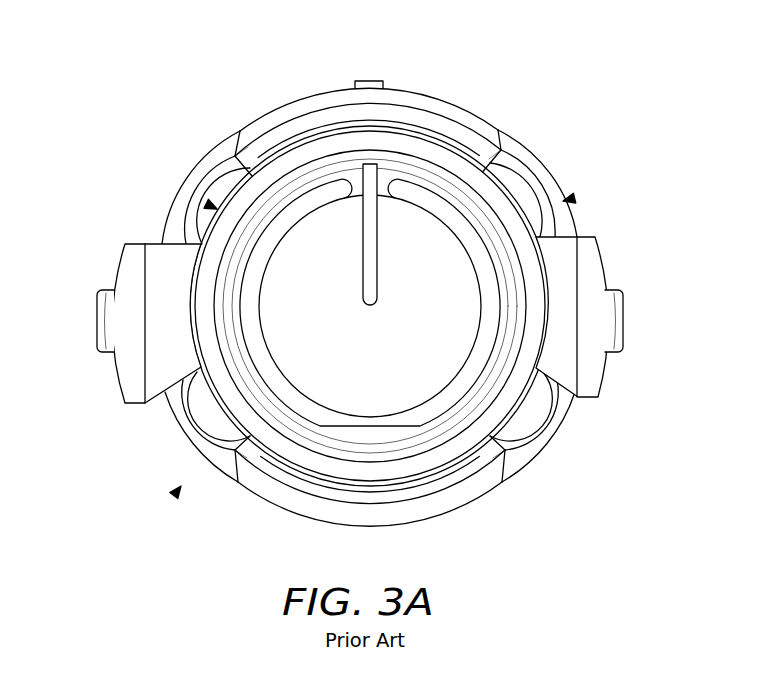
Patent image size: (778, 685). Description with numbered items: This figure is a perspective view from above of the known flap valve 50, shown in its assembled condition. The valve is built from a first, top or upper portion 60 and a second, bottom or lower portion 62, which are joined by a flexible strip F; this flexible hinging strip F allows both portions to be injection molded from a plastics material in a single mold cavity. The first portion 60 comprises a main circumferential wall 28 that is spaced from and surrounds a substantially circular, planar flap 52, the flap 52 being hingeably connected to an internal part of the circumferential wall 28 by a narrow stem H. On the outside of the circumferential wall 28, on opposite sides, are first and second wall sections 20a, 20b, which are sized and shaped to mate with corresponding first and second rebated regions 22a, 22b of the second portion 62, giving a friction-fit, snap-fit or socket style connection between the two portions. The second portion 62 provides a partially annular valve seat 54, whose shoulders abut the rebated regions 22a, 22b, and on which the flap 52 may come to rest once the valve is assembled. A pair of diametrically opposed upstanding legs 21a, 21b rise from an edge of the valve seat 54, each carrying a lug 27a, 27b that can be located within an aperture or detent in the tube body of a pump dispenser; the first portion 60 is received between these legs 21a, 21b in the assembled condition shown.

The first wall section 20a is at (288, 108).
The second wall section 20b is at (463, 492).
The first upstanding leg 21a is at (127, 258).
The second upstanding leg 21b is at (593, 257).
The first rebated region 22a is at (503, 134).
The second rebated region 22b is at (508, 460).
The first lug 27a is at (97, 320).
The second lug 27b is at (624, 320).
The main circumferential wall 28 is at (500, 197).
The flap valve 50 is at (176, 491).
The flap 52 is at (384, 350).
The partially annular valve seat 54 is at (412, 190).
The first portion 60 is at (212, 207).
The second portion 62 is at (568, 200).
The flexible strip F is at (368, 80).
The narrow stem H is at (371, 165).